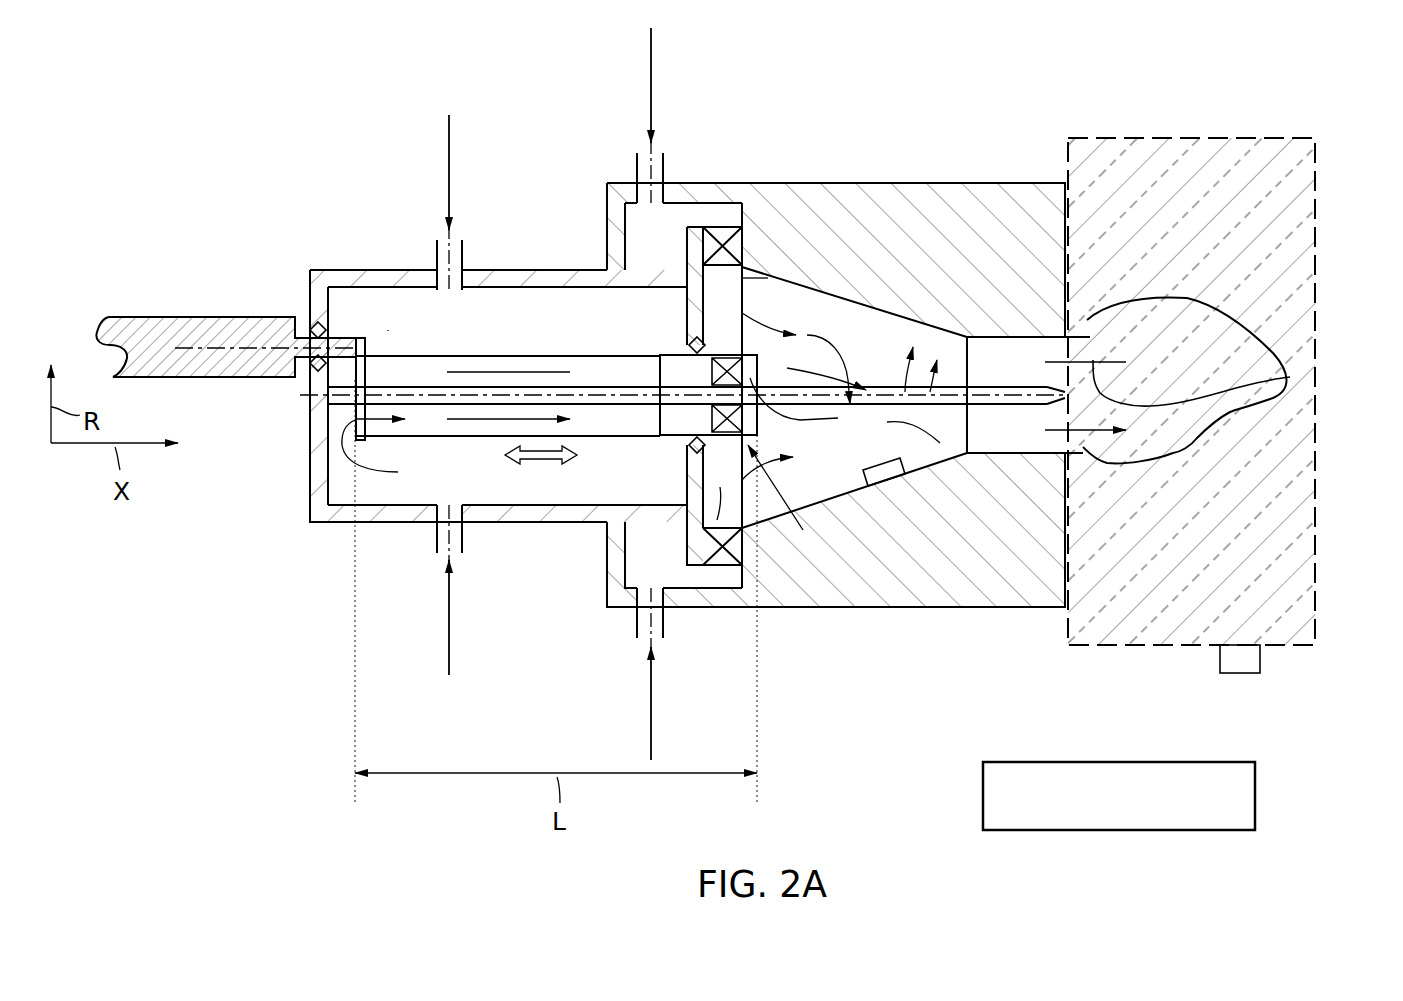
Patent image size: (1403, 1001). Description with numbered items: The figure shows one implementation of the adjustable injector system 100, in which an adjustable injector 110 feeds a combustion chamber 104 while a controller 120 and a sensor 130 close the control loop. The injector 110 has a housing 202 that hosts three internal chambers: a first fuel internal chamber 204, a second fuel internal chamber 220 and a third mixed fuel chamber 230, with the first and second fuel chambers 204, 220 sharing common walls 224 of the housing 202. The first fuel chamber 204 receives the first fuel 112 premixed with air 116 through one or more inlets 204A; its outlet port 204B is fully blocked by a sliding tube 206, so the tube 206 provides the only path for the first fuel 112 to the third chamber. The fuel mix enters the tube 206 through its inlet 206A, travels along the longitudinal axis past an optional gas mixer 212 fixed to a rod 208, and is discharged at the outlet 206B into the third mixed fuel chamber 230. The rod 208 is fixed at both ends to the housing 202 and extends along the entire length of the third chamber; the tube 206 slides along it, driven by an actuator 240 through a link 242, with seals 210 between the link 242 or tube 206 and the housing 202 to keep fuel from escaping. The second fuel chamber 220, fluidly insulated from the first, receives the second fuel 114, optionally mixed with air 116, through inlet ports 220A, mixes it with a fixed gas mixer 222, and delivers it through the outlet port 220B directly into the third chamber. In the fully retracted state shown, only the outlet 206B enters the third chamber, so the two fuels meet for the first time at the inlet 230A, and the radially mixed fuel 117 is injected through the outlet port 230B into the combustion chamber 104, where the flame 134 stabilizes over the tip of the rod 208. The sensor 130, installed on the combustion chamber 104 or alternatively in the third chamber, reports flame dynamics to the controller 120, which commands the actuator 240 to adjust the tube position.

The adjustable injector system 100 is at (172, 82).
The combustion chamber 104 is at (1210, 254).
The adjustable injector 110 is at (407, 86).
The first fuel 112 is at (450, 157).
The second fuel 114 is at (651, 70).
The air 116 is at (450, 623).
The mixed fuel 117 is at (1290, 377).
The controller 120 is at (1255, 797).
The sensor 130 is at (880, 472).
The flame 134 is at (1197, 438).
The housing 202 is at (975, 549).
The first fuel internal chamber 204 is at (540, 497).
The inlets of first fuel chamber 204A is at (463, 253).
The outlet port of first fuel chamber 204B is at (680, 353).
The sliding tube 206 is at (388, 330).
The tube inlet 206A is at (355, 412).
The tube outlet 206B is at (887, 422).
The rod 208 is at (423, 405).
The seals 210 is at (312, 325).
The gas mixer 212 is at (757, 435).
The second fuel internal chamber 220 is at (675, 559).
The inlet ports of second fuel chamber 220A is at (663, 170).
The outlet port of second fuel chamber 220B is at (768, 330).
The gas mixer 222 is at (718, 212).
The common walls 224 is at (687, 465).
The third mixed fuel chamber 230 is at (857, 451).
The inlet of third mixed fuel chamber 230A is at (750, 277).
The outlet port of third mixed fuel chamber 230B is at (1068, 348).
The actuator 240 is at (177, 317).
The link 242 is at (343, 337).